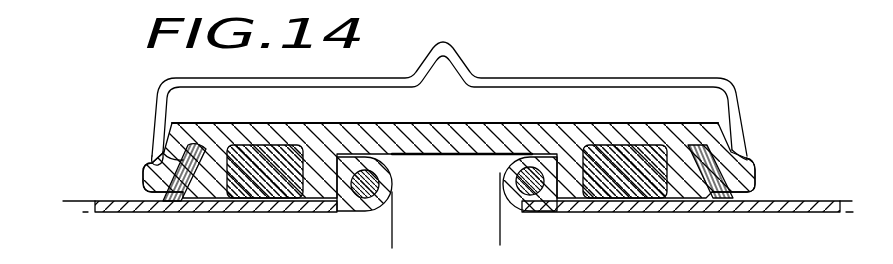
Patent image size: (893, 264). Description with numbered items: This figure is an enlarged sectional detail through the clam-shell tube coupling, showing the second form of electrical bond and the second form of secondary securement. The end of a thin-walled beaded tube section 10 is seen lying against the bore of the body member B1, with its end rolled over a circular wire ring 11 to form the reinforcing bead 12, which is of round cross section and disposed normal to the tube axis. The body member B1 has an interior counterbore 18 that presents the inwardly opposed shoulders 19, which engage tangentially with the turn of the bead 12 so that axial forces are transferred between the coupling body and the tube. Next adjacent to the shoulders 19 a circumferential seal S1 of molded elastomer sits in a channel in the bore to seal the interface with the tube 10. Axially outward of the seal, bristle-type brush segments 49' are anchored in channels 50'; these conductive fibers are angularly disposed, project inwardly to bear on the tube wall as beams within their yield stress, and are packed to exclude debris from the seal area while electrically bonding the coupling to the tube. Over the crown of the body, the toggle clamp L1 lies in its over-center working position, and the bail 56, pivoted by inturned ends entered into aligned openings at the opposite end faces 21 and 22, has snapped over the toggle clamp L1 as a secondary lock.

The beaded tube section 10 is at (112, 214).
The circular ring 11 is at (525, 206).
The bead 12 is at (503, 173).
The interior counterbore 18 is at (417, 158).
The shoulders 19 is at (344, 200).
The end face 21 is at (750, 172).
The end face 22 is at (147, 182).
The brush segments 49' is at (458, 171).
The channels 50' is at (462, 199).
The bail 56 is at (700, 78).
The toggle clamp L1 is at (560, 100).
The body member B1 is at (642, 127).
The circumferential seal S1 is at (622, 199).